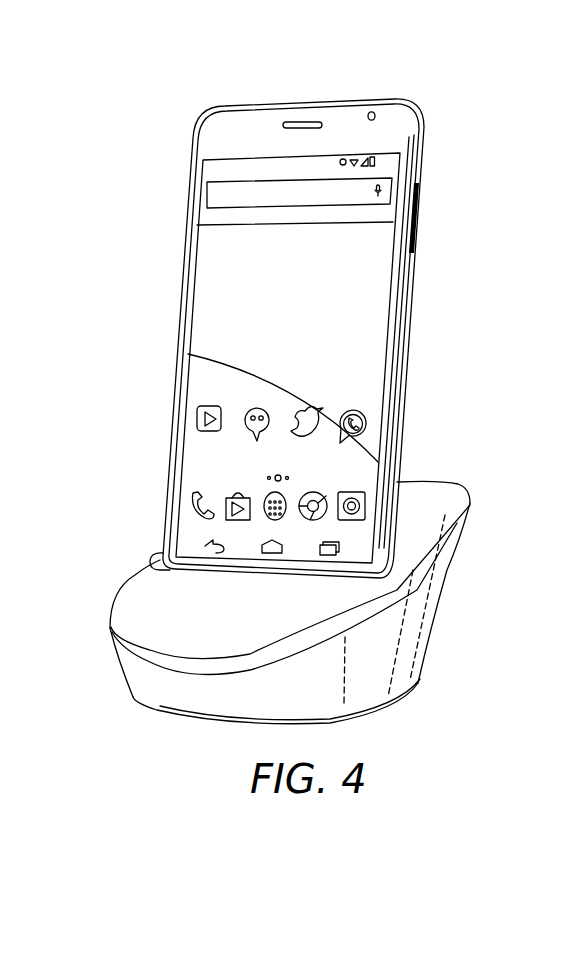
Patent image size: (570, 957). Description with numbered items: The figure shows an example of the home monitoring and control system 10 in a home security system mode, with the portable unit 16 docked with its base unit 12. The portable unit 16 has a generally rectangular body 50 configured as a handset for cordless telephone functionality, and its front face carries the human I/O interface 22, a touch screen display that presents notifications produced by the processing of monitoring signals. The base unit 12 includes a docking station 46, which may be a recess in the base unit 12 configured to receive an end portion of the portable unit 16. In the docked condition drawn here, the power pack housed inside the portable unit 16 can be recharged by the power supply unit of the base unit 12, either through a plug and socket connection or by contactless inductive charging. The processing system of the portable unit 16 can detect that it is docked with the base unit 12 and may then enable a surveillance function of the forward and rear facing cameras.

The home monitoring and control system 10 is at (157, 117).
The base unit 12 is at (475, 576).
The portable unit 16 is at (432, 287).
The human I/O interface 22 is at (200, 291).
The docking station 46 is at (158, 563).
The body 50 is at (419, 112).